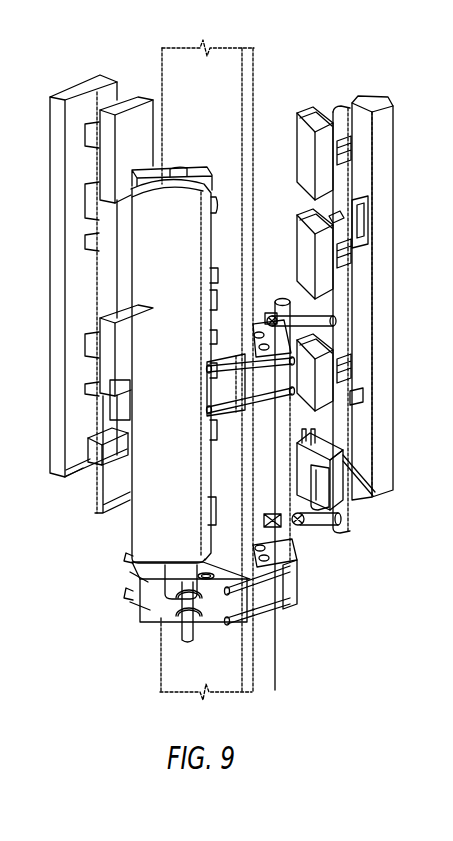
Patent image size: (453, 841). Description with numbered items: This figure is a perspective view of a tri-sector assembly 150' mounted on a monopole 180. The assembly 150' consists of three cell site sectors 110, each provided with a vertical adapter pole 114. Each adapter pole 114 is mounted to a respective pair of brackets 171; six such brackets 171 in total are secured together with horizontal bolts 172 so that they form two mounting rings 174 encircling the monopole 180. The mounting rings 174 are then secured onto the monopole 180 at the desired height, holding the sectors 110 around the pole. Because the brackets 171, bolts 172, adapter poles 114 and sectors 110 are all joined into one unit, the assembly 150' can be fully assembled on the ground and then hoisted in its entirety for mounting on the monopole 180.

The monopole 180 is at (243, 74).
The cell site sector 110 is at (90, 84).
The mounting ring 174 is at (262, 403).
The vertical adapter pole 114 is at (311, 530).
The bracket 171 is at (297, 591).
The horizontal bolt 172 is at (262, 607).
The tri-sector assembly 150' is at (55, 775).